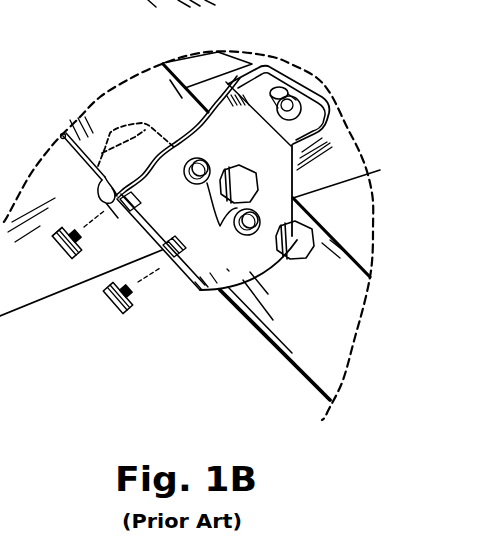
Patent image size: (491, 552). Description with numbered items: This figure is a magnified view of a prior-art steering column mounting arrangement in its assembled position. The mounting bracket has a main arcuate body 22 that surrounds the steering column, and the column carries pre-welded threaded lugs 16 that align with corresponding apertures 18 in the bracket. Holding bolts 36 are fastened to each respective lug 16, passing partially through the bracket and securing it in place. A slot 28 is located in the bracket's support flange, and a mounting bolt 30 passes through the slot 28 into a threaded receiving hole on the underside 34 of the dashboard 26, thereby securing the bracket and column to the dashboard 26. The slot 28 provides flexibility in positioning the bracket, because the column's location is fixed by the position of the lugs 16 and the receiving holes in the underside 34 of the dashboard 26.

The threaded lug 16 is at (207, 157).
The aperture 18 is at (218, 222).
The main arcuate body 22 is at (184, 214).
The dashboard 26 is at (30, 290).
The slot 28 is at (316, 92).
The mounting bolt 30 is at (292, 102).
The underside 34 is at (340, 160).
The holding bolt 36 is at (244, 184).